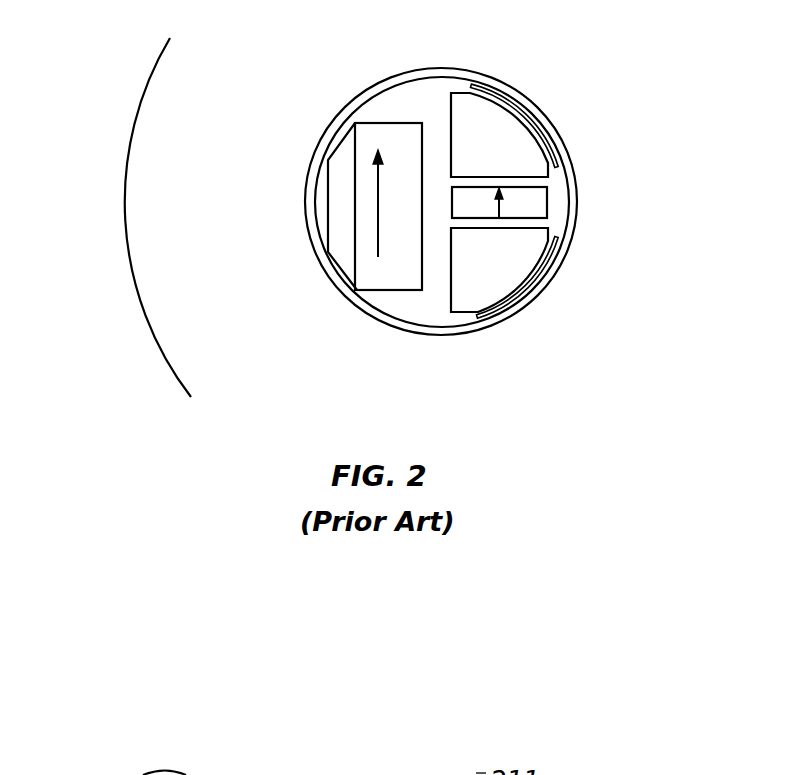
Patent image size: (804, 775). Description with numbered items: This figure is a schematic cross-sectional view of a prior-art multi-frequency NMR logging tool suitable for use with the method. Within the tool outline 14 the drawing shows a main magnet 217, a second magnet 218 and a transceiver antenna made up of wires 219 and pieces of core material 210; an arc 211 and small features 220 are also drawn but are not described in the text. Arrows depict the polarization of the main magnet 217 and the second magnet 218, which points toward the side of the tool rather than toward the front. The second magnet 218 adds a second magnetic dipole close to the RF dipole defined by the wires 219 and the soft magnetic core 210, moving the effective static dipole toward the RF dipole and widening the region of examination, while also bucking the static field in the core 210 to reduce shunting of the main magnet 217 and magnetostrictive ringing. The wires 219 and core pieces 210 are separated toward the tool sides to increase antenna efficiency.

The housing 14 is at (417, 329).
The core material 210 is at (472, 112).
The conduit wall 211 is at (160, 352).
The main magnet 217 is at (352, 262).
The second magnet 218 is at (548, 200).
The wires 219 is at (542, 140).
The gaps 220 is at (548, 180).